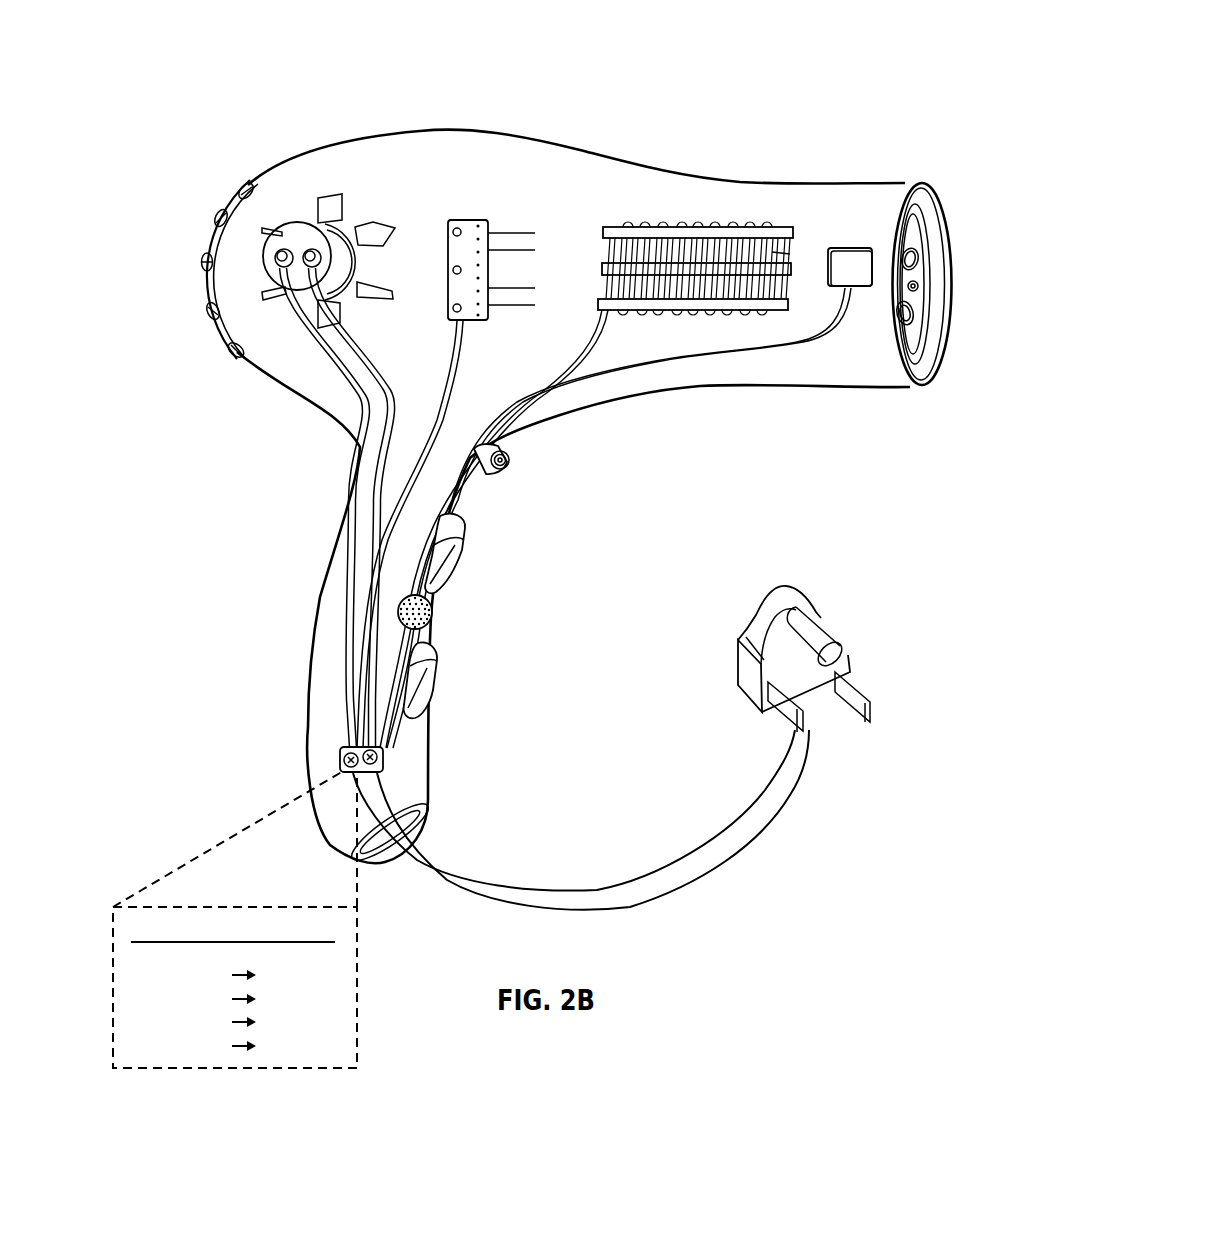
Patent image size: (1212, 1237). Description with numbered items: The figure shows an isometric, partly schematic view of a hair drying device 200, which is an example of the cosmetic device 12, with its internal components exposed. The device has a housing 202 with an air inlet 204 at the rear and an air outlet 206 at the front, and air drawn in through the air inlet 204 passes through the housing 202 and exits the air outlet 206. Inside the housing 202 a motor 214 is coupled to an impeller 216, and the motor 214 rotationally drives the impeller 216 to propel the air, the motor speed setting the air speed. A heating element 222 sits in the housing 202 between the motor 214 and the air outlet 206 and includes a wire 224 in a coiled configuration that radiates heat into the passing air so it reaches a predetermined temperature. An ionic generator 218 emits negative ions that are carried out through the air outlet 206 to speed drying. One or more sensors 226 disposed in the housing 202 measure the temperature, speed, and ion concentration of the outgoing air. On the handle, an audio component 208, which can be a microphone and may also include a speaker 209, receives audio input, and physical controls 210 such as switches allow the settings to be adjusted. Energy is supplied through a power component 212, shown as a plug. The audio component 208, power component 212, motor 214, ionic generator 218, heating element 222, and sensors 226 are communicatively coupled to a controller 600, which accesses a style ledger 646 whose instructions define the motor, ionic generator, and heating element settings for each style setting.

The cosmetic device 12 is at (567, 534).
The hair drying device 200 is at (864, 30).
The housing 202 is at (594, 150).
The air inlet 204 is at (198, 260).
The air outlet 206 is at (942, 270).
The audio component 208 is at (479, 623).
The speaker 209 is at (430, 618).
The physical controls 210 is at (517, 462).
The power component 212 is at (838, 620).
The motor 214 is at (334, 233).
The impeller 216 is at (385, 242).
The ionic generator 218 is at (468, 212).
The heating element 222 is at (707, 220).
The wire 224 is at (772, 252).
The sensors 226 is at (855, 250).
The controller 600 is at (385, 757).
The style ledger 646 is at (235, 919).